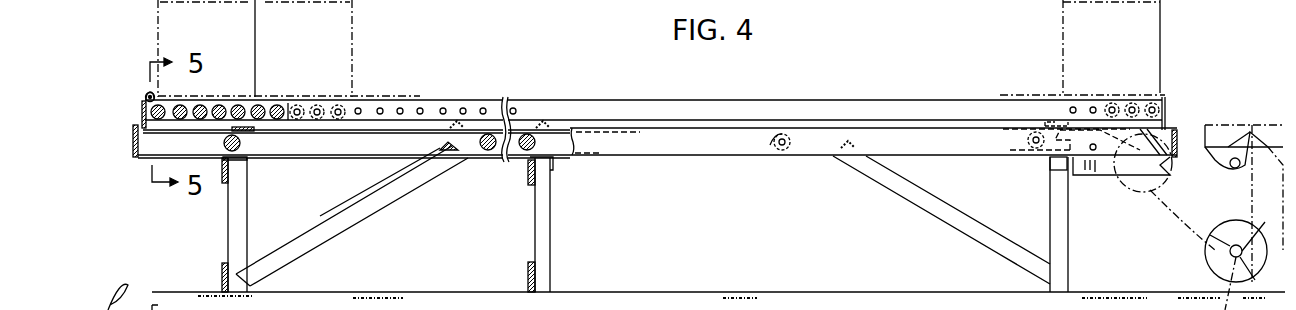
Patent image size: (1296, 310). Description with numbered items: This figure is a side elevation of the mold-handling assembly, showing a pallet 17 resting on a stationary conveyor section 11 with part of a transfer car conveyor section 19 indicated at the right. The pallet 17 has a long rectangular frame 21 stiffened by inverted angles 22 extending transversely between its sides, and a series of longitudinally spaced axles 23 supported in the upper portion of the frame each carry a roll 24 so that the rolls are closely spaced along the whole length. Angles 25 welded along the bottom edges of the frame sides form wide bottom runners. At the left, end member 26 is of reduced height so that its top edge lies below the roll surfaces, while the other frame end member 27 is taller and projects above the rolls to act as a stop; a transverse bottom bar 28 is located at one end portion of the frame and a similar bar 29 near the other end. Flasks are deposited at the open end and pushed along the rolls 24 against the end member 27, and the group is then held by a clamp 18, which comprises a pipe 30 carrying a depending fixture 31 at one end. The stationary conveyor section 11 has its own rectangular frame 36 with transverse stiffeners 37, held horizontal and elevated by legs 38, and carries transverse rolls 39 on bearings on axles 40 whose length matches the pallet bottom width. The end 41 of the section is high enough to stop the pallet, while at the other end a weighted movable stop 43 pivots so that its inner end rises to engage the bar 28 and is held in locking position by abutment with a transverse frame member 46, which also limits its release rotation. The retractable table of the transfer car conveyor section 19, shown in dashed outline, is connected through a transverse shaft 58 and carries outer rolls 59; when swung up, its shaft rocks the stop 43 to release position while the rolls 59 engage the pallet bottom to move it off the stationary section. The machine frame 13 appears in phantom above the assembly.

The stationary conveyor section 11 is at (204, 229).
The machine frame 13 is at (1270, 0).
The pallet 17 is at (598, 98).
The clamp 18 is at (145, 92).
The conveyor section 19 is at (1273, 122).
The rectangular frame 21 is at (705, 105).
The inverted angles 22 is at (462, 122).
The axles 23 is at (420, 108).
The roll 24 is at (277, 108).
The angles 25 is at (521, 133).
The end member 26 is at (140, 115).
The other frame end member 27 is at (1166, 97).
The transverse bottom bar 28 is at (1055, 124).
The bar 29 is at (232, 129).
The pipe 30 is at (146, 98).
The depending fixture 31 is at (148, 93).
The rectangular frame 36 is at (713, 157).
The transverse stiffeners 37 is at (440, 151).
The legs 38 is at (249, 222).
The transverse rolls 39 is at (240, 149).
The axles 40 is at (779, 145).
The end of conveyor section 41 is at (134, 140).
The movable stop 43 is at (1130, 176).
The transverse frame member 46 is at (1068, 175).
The transverse shaft 58 is at (1232, 168).
The outer rolls 59 is at (1210, 258).